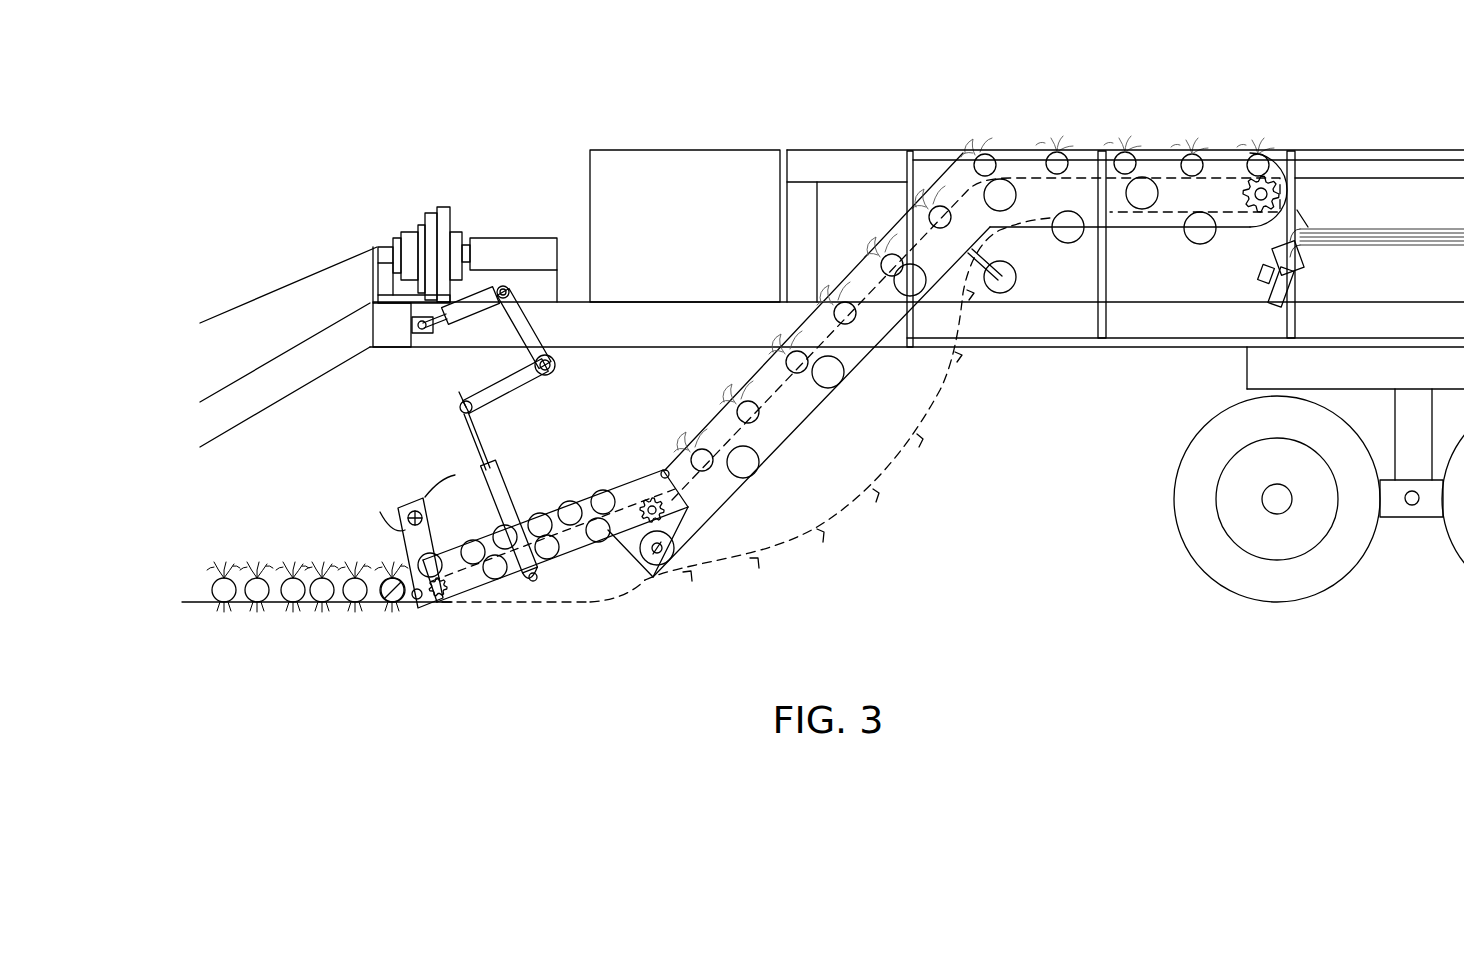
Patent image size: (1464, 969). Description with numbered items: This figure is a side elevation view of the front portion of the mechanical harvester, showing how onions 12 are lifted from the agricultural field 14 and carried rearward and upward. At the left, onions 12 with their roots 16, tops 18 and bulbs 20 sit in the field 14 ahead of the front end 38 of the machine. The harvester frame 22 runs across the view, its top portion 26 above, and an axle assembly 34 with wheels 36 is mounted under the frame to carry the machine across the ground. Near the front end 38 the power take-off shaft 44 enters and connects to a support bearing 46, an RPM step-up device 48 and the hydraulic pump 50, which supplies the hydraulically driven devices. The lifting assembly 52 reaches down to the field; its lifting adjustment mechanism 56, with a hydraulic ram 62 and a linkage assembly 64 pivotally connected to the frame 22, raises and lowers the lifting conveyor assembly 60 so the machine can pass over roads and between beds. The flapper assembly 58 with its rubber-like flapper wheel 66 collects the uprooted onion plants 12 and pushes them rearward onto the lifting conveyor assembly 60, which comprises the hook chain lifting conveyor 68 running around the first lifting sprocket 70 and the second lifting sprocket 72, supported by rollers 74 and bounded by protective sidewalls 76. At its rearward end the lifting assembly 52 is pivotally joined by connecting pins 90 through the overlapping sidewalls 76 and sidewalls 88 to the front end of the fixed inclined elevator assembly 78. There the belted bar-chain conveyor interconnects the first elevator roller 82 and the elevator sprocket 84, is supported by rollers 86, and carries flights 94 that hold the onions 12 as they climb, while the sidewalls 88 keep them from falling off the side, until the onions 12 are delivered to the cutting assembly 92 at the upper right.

The onions 12 is at (257, 520).
The agricultural field 14 is at (197, 600).
The roots 16 is at (257, 607).
The tops 18 is at (220, 560).
The bulbs 20 is at (297, 598).
The harvester frame 22 is at (640, 320).
The top portion 26 is at (838, 137).
The axle assembly 34 is at (1413, 525).
The wheels 36 is at (1220, 562).
The front end 38 is at (288, 307).
The power take-off shaft 44 is at (233, 308).
The support bearing 46 is at (383, 243).
The RPM step-up device 48 is at (437, 207).
The hydraulic pump 50 is at (498, 250).
The lifting assembly 52 is at (575, 531).
The lifting adjustment mechanism 56 is at (492, 436).
The flapper assembly 58 is at (413, 487).
The lifting conveyor assembly 60 is at (518, 594).
The hydraulic ram 62 is at (442, 318).
The linkage assembly 64 is at (458, 354).
The flapper wheel 66 is at (390, 500).
The lifting conveyor 68 is at (607, 600).
The first lifting sprocket 70 is at (432, 598).
The second lifting sprocket 72 is at (672, 513).
The rollers 74 is at (493, 572).
The protective sidewalls 76 is at (492, 555).
The inclined elevator assembly 78 is at (966, 356).
The first elevator roller 82 is at (660, 565).
The elevator sprocket 84 is at (1270, 188).
The rollers 86 is at (746, 466).
The sidewalls 88 is at (832, 376).
The connecting pins 90 is at (662, 470).
The cutting assembly 92 is at (1362, 225).
The flights 94 is at (897, 455).